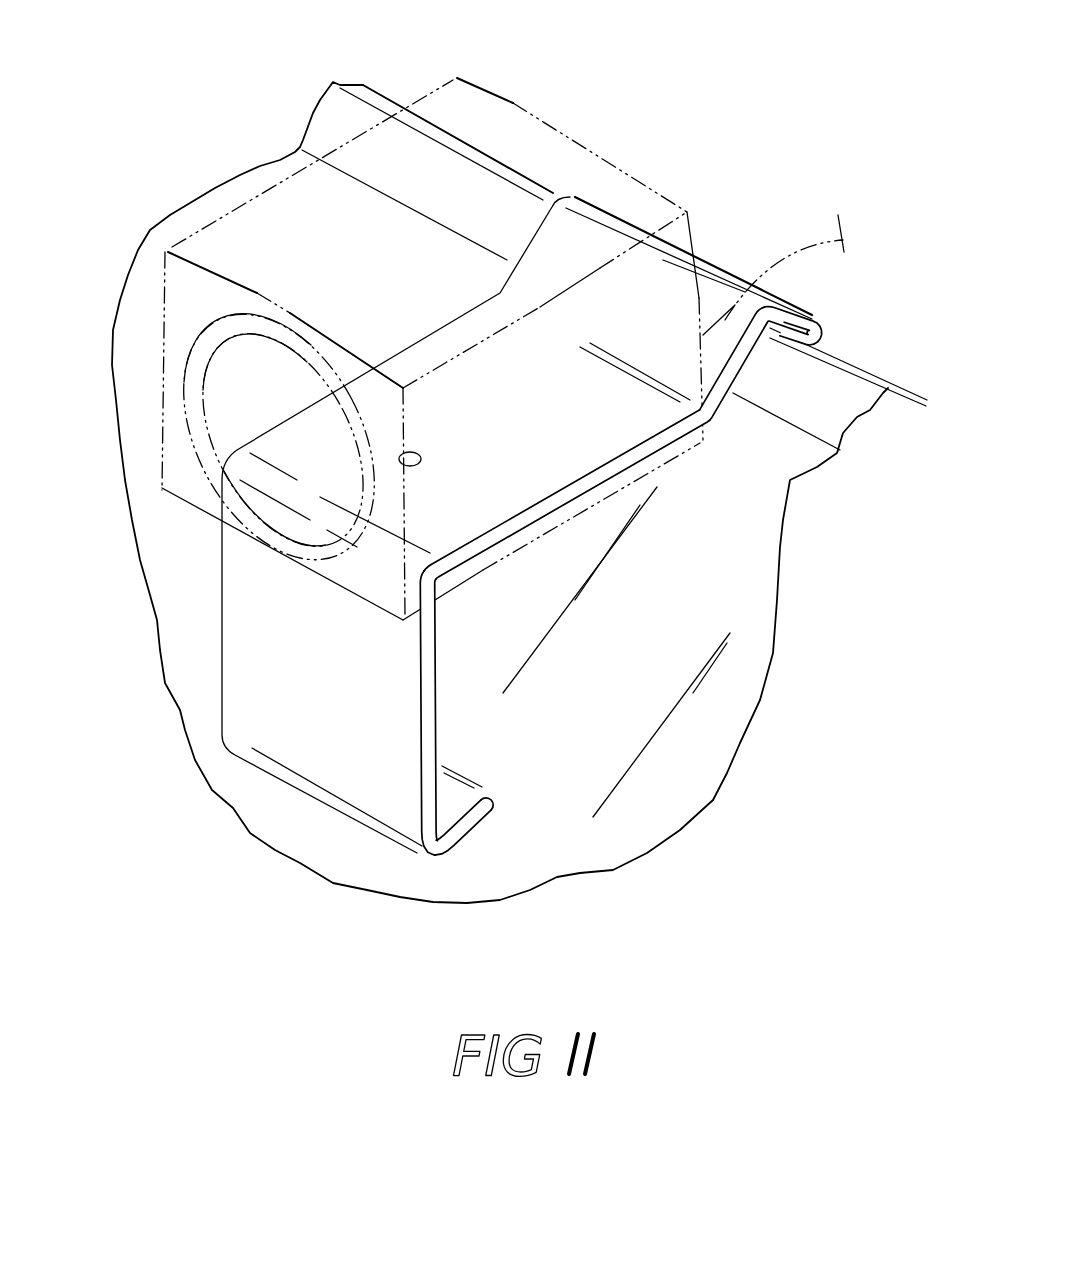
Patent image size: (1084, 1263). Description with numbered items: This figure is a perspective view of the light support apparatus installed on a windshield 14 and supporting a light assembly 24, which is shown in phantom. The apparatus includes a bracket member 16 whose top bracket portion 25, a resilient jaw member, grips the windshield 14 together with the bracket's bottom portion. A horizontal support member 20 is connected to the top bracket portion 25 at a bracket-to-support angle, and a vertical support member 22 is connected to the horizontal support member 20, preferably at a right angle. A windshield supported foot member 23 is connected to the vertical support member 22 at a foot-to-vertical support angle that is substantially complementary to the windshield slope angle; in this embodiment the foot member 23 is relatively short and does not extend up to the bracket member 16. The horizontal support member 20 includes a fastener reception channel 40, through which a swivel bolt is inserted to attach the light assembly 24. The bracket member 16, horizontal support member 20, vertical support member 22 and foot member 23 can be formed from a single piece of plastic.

The windshield 14 is at (500, 492).
The bracket member 16 is at (748, 301).
The horizontal support member 20 is at (692, 573).
The vertical support member 22 is at (509, 713).
The windshield supported foot member 23 is at (501, 834).
The light assembly 24 is at (492, 317).
The top bracket portion 25 is at (832, 347).
The fastener reception channel 40 is at (420, 452).